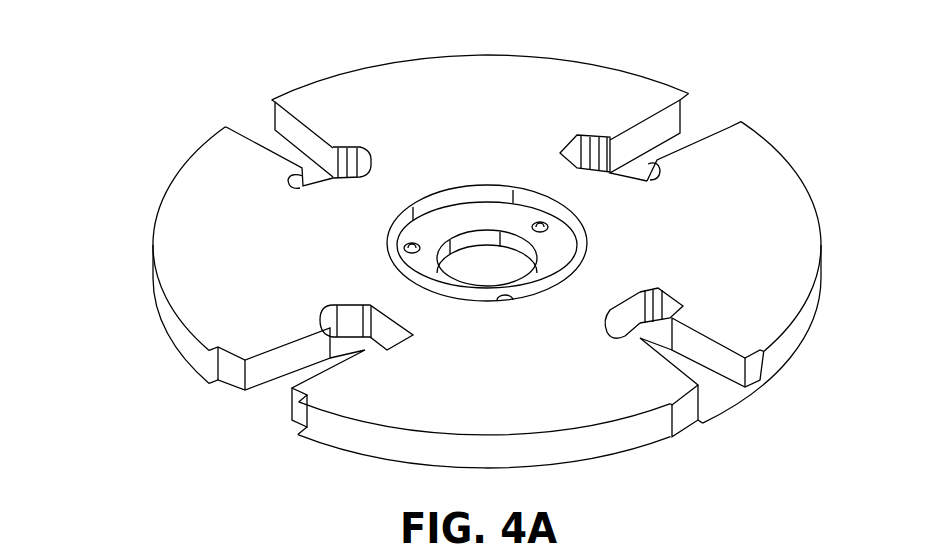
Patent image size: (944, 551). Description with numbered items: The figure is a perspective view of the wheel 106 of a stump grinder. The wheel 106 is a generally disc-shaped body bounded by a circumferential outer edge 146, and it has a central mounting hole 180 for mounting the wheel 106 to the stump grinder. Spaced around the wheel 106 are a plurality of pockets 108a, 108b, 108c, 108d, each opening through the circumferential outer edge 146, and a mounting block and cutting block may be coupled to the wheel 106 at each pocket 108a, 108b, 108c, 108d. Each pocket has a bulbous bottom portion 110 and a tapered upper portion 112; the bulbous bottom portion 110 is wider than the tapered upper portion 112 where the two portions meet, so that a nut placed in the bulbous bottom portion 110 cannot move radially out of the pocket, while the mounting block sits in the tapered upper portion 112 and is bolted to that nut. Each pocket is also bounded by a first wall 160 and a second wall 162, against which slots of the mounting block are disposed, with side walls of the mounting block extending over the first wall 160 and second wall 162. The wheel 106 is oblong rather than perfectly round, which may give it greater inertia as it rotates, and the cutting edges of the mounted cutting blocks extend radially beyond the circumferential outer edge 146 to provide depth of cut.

The wheel 106 is at (124, 143).
The pocket 108a is at (240, 116).
The pocket 108b is at (698, 114).
The pocket 108c is at (712, 404).
The pocket 108d is at (268, 405).
The bulbous bottom portion 110 is at (668, 318).
The tapered upper portion 112 is at (680, 372).
The circumferential outer edge 146 is at (233, 368).
The first wall 160 is at (304, 148).
The second wall 162 is at (273, 365).
The mounting hole 180 is at (470, 262).